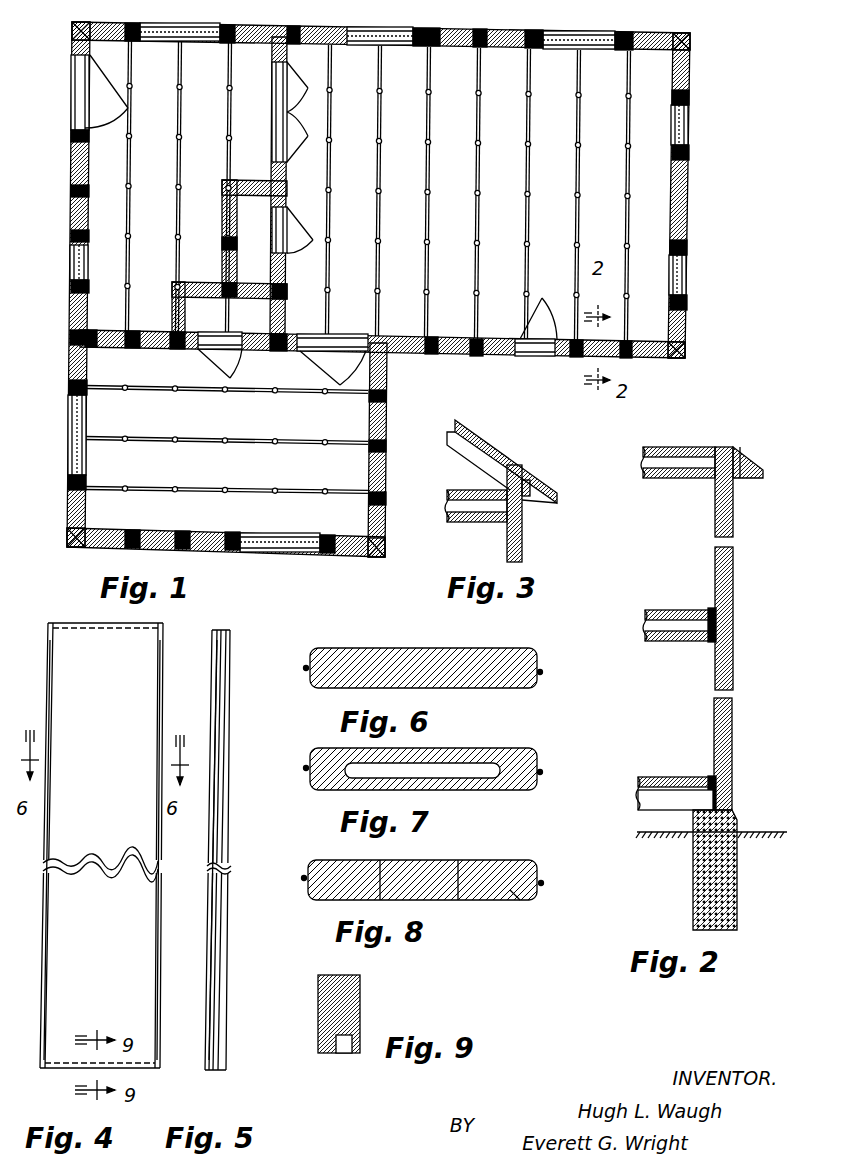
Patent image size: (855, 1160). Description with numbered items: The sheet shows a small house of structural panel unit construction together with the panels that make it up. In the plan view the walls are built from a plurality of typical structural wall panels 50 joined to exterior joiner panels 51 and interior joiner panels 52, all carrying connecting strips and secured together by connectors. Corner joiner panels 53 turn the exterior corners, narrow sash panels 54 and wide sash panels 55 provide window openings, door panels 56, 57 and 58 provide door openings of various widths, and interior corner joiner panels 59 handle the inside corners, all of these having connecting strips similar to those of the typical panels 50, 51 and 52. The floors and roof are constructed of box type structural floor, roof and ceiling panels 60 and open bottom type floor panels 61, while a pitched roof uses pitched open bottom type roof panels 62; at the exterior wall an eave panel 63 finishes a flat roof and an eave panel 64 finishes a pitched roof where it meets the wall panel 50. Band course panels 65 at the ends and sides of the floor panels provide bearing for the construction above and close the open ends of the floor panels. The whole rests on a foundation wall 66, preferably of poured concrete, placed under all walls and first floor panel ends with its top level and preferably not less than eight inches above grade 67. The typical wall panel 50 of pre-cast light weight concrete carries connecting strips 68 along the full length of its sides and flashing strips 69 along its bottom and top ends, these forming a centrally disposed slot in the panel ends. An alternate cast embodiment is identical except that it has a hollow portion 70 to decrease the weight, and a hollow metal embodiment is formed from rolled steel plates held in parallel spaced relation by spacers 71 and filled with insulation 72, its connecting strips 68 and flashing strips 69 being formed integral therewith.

In FIG. 1, the structural wall panel 50 is at (385, 360).
In FIG. 2, the structural wall panel 50 is at (714, 725).
In FIG. 3, the structural wall panel 50 is at (524, 545).
In FIG. 4, the structural wall panel 50 is at (130, 720).
In FIG. 5, the structural wall panel 50 is at (230, 745).
In FIG. 6, the structural wall panel 50 is at (420, 650).
In FIG. 7, the structural wall panel 50 is at (460, 750).
In FIG. 8, the structural wall panel 50 is at (440, 861).
In FIG. 9, the structural wall panel 50 is at (339, 1014).
In FIG. 1, the exterior joiner panel 51 is at (385, 395).
In FIG. 1, the interior joiner panel 52 is at (375, 445).
In FIG. 1, the corner joiner panel 53 is at (385, 555).
In FIG. 1, the narrow sash panel 54 is at (688, 275).
In FIG. 1, the wide sash panel 55 is at (290, 553).
In FIG. 1, the door panel 56 is at (545, 357).
In FIG. 1, the door panel 57 is at (225, 350).
In FIG. 1, the door panel 58 is at (290, 110).
In FIG. 1, the interior corner joiner panel 59 is at (172, 285).
In FIG. 2, the box type structural floor, roof and ceiling panel 60 is at (680, 612).
In FIG. 3, the box type structural floor, roof and ceiling panel 60 is at (475, 524).
In FIG. 1, the open bottom type floor panel 61 is at (230, 490).
In FIG. 2, the open bottom type floor panel 61 is at (660, 777).
In FIG. 3, the pitched open bottom type roof panel 62 is at (490, 452).
In FIG. 2, the eave panel 63 is at (750, 462).
In FIG. 3, the eave panel 64 is at (530, 488).
In FIG. 2, the band course panel 65 is at (716, 790).
In FIG. 2, the foundation wall 66 is at (737, 885).
In FIG. 2, the grade 67 is at (760, 832).
In FIG. 4, the connecting strip 68 is at (160, 915).
In FIG. 5, the connecting strip 68 is at (220, 920).
In FIG. 6, the connecting strip 68 is at (543, 672).
In FIG. 7, the connecting strip 68 is at (543, 772).
In FIG. 8, the connecting strip 68 is at (544, 882).
In FIG. 4, the flashing strip 69 is at (70, 1065).
In FIG. 9, the flashing strip 69 is at (345, 1053).
In FIG. 7, the hollow portion 70 is at (480, 777).
In FIG. 8, the spacer 71 is at (460, 898).
In FIG. 8, the insulation 72 is at (515, 898).